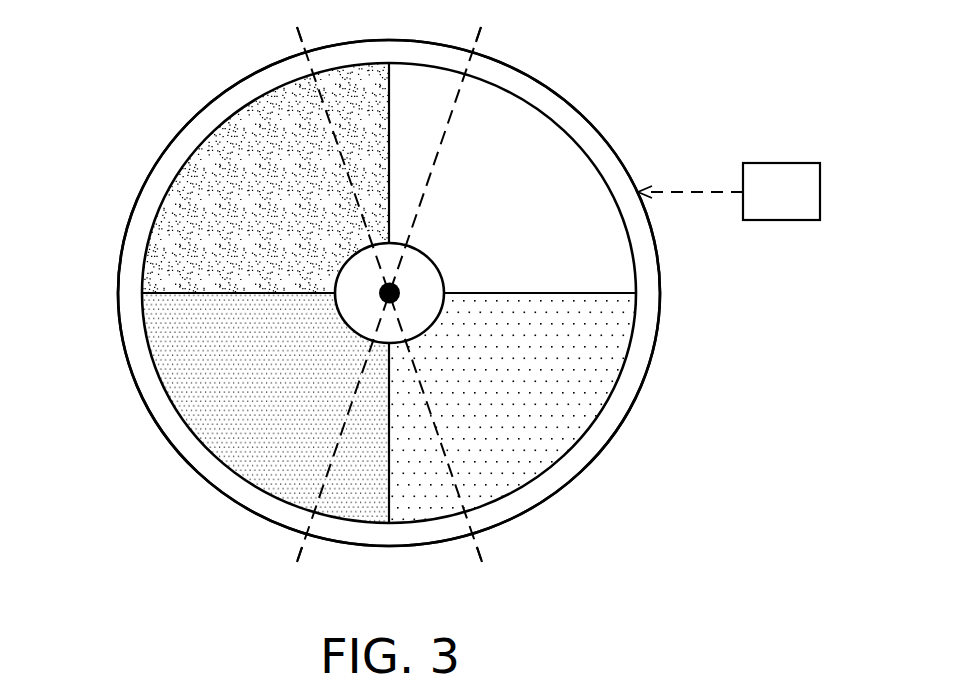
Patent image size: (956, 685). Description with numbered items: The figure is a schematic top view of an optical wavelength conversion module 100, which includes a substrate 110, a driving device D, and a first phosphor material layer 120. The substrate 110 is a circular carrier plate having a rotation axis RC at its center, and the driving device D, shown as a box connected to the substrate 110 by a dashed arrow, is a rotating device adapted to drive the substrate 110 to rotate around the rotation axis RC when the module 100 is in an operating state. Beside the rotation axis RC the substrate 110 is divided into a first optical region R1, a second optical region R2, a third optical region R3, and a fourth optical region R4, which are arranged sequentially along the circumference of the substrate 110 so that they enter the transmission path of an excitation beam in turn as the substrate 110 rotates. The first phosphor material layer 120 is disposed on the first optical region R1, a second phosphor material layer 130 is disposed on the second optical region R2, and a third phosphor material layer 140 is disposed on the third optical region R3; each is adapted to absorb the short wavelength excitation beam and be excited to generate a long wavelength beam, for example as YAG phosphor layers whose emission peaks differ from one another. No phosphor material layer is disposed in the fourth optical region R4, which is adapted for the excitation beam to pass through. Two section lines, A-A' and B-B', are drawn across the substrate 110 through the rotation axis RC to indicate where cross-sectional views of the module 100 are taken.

The optical wavelength conversion module 100 is at (782, 595).
The substrate 110 is at (597, 130).
The first phosphor material layer 120 is at (205, 200).
The second phosphor material layer 130 is at (205, 402).
The third phosphor material layer 140 is at (582, 350).
The first optical region R1 is at (228, 117).
The second optical region R2 is at (223, 467).
The third optical region R3 is at (530, 485).
The fourth optical region R4 is at (547, 112).
The rotation axis RC is at (400, 291).
The driving device D is at (782, 163).
The line A-A' A is at (364, 294).
The line A- A' is at (452, 563).
The line B-B' B is at (272, 540).
The line B- B' is at (389, 284).